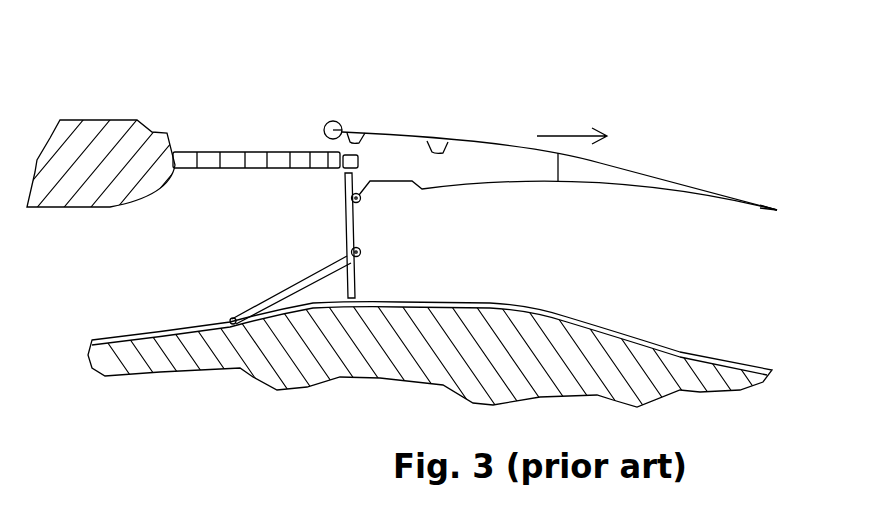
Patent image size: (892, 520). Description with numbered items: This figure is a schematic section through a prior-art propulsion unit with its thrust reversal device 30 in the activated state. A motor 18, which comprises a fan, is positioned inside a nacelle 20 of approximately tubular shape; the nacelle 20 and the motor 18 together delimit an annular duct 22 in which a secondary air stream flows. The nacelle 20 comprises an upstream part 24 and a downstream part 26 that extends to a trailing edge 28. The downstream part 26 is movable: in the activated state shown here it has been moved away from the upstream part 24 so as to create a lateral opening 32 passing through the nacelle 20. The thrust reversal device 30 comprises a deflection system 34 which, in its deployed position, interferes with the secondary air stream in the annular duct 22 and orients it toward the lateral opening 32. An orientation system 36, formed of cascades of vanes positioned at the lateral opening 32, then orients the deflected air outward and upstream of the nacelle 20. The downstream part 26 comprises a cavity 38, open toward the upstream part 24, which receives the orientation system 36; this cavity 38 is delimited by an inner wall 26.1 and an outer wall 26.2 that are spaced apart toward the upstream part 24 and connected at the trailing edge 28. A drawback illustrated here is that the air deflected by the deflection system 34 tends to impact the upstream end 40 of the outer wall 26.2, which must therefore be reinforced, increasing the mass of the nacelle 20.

The motor 18 is at (675, 388).
The nacelle 20 is at (126, 125).
The annular duct 22 is at (119, 260).
The upstream part 24 is at (116, 134).
The downstream part 26 is at (570, 142).
The inner wall 26.1 is at (477, 183).
The outer wall 26.2 is at (460, 136).
The trailing edge 28 is at (778, 209).
The thrust reversal device 30 is at (265, 149).
The lateral opening 32 is at (203, 133).
The deflection system 34 is at (362, 235).
The orientation system 36 is at (236, 166).
The cavity 38 is at (413, 152).
The upstream end 40 is at (334, 121).